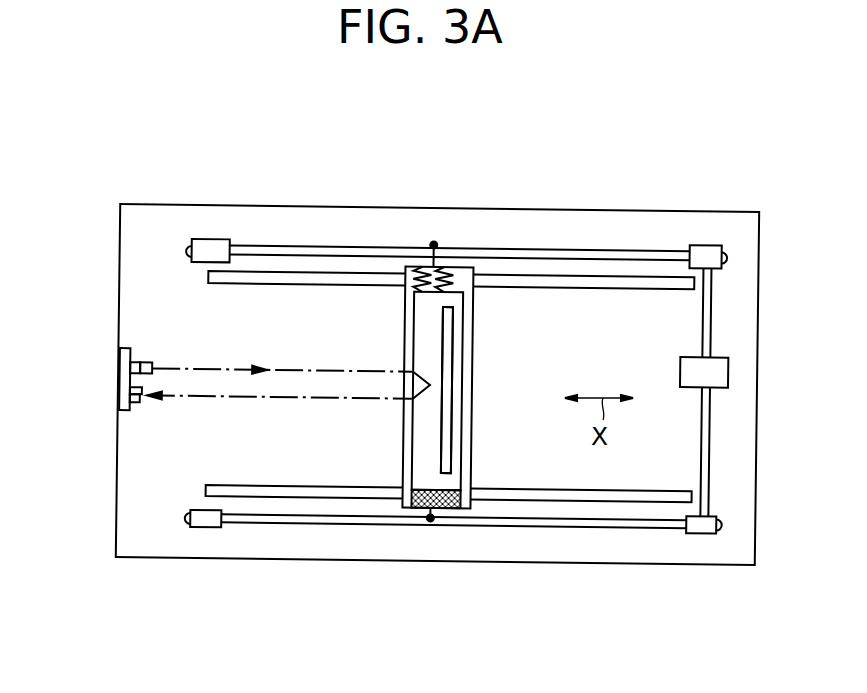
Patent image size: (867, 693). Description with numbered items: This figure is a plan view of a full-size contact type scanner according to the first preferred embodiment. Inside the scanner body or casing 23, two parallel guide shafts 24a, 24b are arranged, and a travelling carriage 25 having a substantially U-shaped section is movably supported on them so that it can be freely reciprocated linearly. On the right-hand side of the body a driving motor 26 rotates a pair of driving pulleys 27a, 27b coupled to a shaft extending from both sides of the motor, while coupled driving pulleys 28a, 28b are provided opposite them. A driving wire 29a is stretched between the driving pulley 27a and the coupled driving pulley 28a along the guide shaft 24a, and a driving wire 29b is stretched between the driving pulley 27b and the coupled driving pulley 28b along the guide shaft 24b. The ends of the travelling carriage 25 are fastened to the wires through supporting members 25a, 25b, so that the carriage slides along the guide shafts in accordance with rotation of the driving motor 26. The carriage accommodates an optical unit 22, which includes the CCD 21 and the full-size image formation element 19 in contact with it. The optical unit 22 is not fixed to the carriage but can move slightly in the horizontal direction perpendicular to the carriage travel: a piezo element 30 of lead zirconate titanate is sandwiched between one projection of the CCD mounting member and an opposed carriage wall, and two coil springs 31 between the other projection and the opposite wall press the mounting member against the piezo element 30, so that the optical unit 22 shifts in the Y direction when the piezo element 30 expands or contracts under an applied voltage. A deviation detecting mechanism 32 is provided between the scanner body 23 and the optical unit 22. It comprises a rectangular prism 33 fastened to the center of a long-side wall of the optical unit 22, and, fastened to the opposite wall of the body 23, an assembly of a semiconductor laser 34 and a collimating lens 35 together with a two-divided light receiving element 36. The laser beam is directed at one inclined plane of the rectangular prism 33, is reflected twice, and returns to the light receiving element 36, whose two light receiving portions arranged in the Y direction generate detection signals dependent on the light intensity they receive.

The scanner body 23 is at (120, 245).
The coupled driving pulley 28a is at (222, 240).
The driving wire 29a is at (340, 246).
The supporting member 25a is at (427, 246).
The coil springs 31 is at (455, 278).
The guide shaft 24a is at (567, 278).
The driving pulley 27a is at (705, 245).
The driving motor 26 is at (729, 368).
The charge-coupled device 21 is at (453, 331).
The full-size image formation element 19 is at (509, 390).
The optical unit 22 is at (463, 389).
The rectangular prism 33 is at (412, 368).
The collimating lens 35 is at (150, 362).
The semiconductor laser 34 is at (122, 345).
The 2-divided light receiving element 36 is at (125, 412).
The deviation detecting mechanism 32 is at (197, 396).
The coupled driving pulley 28b is at (218, 528).
The driving wire 29b is at (322, 527).
The supporting member 25b is at (430, 520).
The piezo element 30 is at (456, 510).
The travelling carriage 25 is at (473, 455).
The guide shaft 24b is at (600, 494).
The driving pulley 27b is at (706, 536).